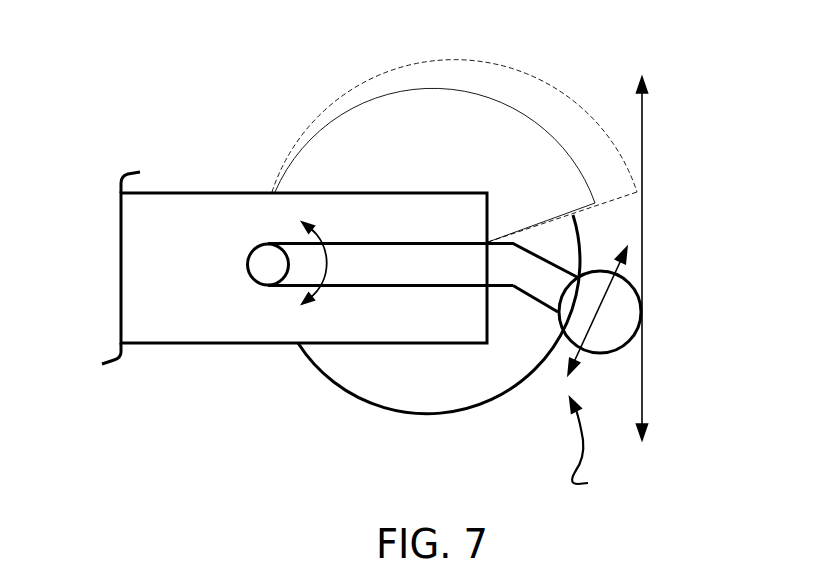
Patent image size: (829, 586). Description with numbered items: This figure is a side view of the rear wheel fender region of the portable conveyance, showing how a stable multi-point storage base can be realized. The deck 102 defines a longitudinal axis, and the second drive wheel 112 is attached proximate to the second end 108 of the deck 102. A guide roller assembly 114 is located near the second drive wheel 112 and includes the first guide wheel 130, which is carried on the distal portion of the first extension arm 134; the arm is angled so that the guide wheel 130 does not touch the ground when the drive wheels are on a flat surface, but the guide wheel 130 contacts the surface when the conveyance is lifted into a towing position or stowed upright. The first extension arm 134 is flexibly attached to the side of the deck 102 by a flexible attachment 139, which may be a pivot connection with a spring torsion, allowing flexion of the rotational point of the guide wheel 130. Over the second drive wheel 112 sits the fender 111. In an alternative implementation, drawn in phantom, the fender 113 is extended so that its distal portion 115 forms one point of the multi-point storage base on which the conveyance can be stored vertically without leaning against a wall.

The deck 102 is at (127, 260).
The second end 108 is at (312, 323).
The flexible attachment 139 is at (267, 265).
The first extension arm 134 is at (530, 283).
The first guide wheel 130 is at (638, 291).
The second drive wheel 112 is at (330, 373).
The fender 111 is at (447, 88).
The fender 113 is at (563, 90).
The distal portion 115 is at (637, 172).
The guide roller assembly 114 is at (597, 451).